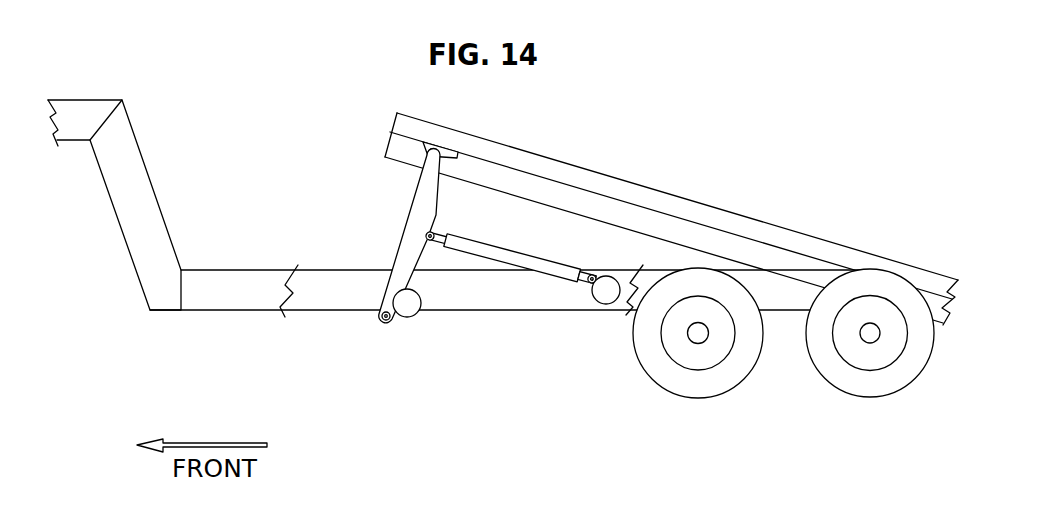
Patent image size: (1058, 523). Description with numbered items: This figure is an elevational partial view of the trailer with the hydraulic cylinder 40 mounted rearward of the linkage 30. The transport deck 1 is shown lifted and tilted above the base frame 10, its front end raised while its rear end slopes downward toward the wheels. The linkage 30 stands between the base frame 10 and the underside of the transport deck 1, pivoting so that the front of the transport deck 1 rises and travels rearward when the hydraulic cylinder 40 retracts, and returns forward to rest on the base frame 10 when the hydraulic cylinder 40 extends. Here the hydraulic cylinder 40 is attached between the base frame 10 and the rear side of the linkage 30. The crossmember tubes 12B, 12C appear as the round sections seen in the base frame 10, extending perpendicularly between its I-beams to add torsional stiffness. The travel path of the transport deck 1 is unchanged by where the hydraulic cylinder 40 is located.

The transport deck 1 is at (547, 147).
The base frame 10 is at (300, 323).
The linkage 30 is at (400, 200).
The hydraulic cylinder 40 is at (502, 258).
The crossmember tube 12B is at (404, 317).
The crossmember tube 12C is at (605, 304).